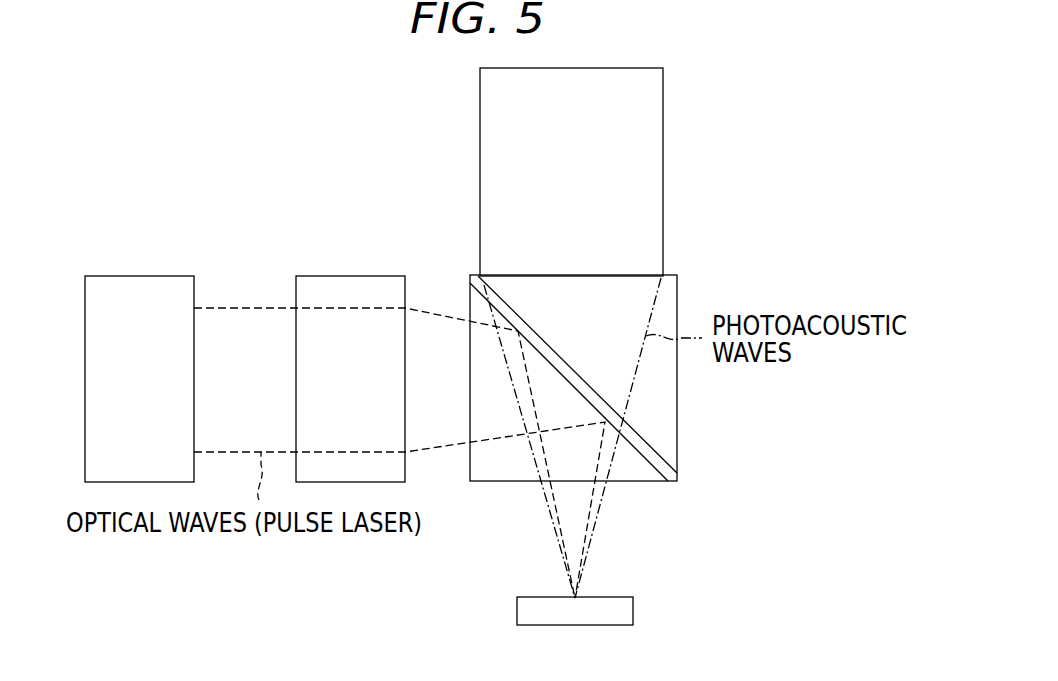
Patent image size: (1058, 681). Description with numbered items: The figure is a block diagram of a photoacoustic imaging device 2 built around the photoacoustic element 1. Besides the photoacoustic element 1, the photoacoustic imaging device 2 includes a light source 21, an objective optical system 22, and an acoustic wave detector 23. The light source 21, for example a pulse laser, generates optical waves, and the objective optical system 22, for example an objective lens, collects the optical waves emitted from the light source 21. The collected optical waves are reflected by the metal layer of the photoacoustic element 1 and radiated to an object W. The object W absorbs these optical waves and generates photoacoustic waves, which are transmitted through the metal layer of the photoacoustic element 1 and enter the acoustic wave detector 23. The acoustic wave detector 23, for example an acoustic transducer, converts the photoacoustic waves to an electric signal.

The photoacoustic imaging device 2 is at (128, 110).
The light source 21 is at (141, 274).
The objective optical system 22 is at (353, 274).
The acoustic wave detector 23 is at (664, 173).
The photoacoustic element 1 is at (677, 392).
The object W is at (634, 607).